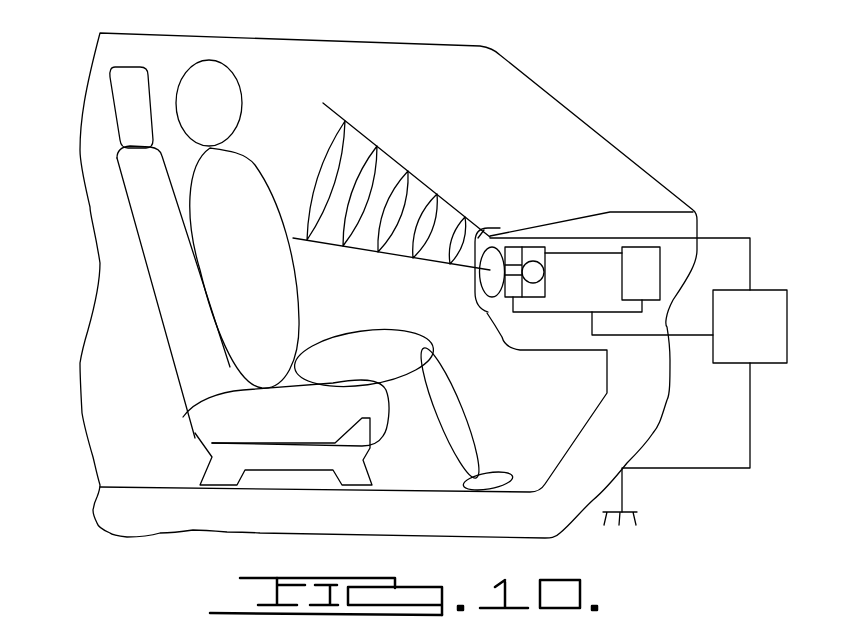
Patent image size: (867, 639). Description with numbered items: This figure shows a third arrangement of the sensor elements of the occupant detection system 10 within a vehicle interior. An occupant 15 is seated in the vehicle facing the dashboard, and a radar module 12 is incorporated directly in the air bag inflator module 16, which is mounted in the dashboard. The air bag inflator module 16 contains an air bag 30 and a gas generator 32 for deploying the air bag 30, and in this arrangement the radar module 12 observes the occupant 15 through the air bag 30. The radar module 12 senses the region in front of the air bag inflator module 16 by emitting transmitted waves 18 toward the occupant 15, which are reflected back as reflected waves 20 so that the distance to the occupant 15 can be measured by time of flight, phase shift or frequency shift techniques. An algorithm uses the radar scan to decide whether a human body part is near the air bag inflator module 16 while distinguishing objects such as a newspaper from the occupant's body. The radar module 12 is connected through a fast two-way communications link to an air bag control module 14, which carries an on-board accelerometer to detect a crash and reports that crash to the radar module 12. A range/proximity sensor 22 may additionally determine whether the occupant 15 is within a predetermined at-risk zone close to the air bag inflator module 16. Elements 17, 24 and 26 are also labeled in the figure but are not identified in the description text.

The occupant detection system 10 is at (654, 120).
The radar module 12 is at (510, 288).
The air bag control module 14 is at (652, 250).
The occupant 15 is at (240, 85).
The air bag inflator module 16 is at (502, 302).
The vehicle seat 17 is at (117, 192).
The transmitted waves 18 is at (318, 197).
The reflected waves 20 is at (343, 163).
The range/proximity sensor 22 is at (776, 362).
The sensor housing 24 is at (490, 222).
The housing aperture 26 is at (480, 238).
The air bag 30 is at (493, 240).
The gas generator 32 is at (541, 284).